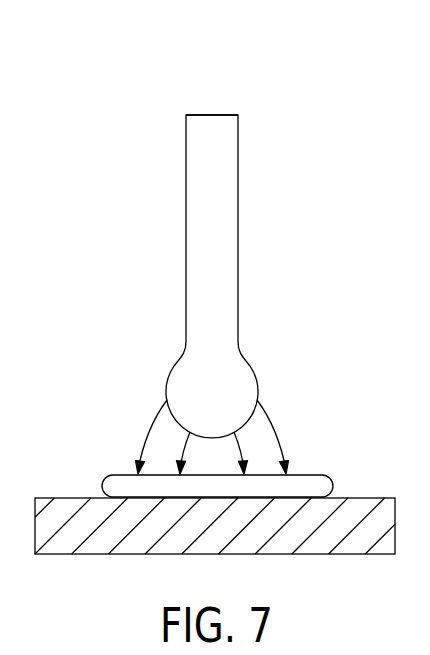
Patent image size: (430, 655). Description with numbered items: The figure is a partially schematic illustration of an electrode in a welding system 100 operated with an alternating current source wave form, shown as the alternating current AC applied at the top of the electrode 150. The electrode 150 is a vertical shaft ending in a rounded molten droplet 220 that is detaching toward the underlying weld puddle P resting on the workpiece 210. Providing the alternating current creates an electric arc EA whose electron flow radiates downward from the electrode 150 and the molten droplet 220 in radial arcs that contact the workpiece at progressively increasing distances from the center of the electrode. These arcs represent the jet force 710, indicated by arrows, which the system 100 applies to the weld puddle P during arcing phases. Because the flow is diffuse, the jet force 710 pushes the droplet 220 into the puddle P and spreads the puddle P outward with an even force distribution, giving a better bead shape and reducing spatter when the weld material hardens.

The system 100 is at (198, 272).
The electrode 150 is at (222, 225).
The molten droplet 220 is at (243, 376).
The alternating current AC is at (214, 106).
The electric arc EA is at (218, 419).
The jet force 710 is at (296, 429).
The weld puddle P is at (330, 486).
The base / substrate 210 is at (60, 542).